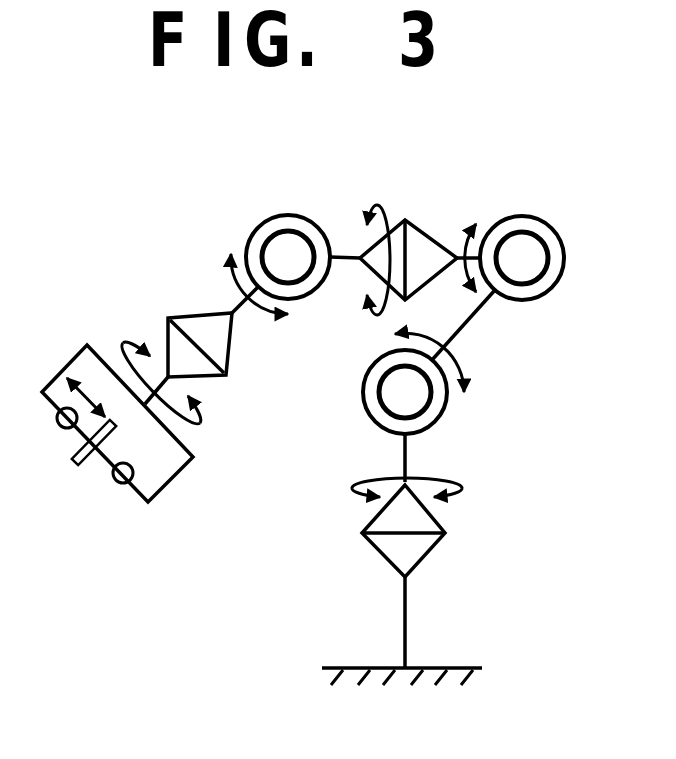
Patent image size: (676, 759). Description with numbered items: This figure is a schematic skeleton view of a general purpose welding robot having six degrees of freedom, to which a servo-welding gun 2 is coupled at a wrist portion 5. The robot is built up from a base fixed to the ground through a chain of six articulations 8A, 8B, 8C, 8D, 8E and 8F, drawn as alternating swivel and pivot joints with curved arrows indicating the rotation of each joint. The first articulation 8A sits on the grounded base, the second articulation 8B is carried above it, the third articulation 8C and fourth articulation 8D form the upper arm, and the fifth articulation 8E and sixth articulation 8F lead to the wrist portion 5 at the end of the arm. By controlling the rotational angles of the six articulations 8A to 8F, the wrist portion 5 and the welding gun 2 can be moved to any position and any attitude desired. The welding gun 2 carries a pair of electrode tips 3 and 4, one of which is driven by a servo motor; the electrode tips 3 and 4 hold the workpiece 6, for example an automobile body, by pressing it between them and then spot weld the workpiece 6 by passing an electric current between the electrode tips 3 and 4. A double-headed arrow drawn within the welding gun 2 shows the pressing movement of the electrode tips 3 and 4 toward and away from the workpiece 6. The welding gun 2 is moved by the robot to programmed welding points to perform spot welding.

The servo-welding gun 2 is at (177, 478).
The electrode tip 3 is at (60, 430).
The electrode tip 4 is at (120, 487).
The wrist portion 5 is at (140, 397).
The workpiece 6 is at (90, 463).
The articulation 8A is at (390, 563).
The articulation 8B is at (370, 413).
The articulation 8C is at (522, 218).
The articulation 8D is at (413, 220).
The articulation 8E is at (268, 217).
The articulation 8F is at (195, 315).